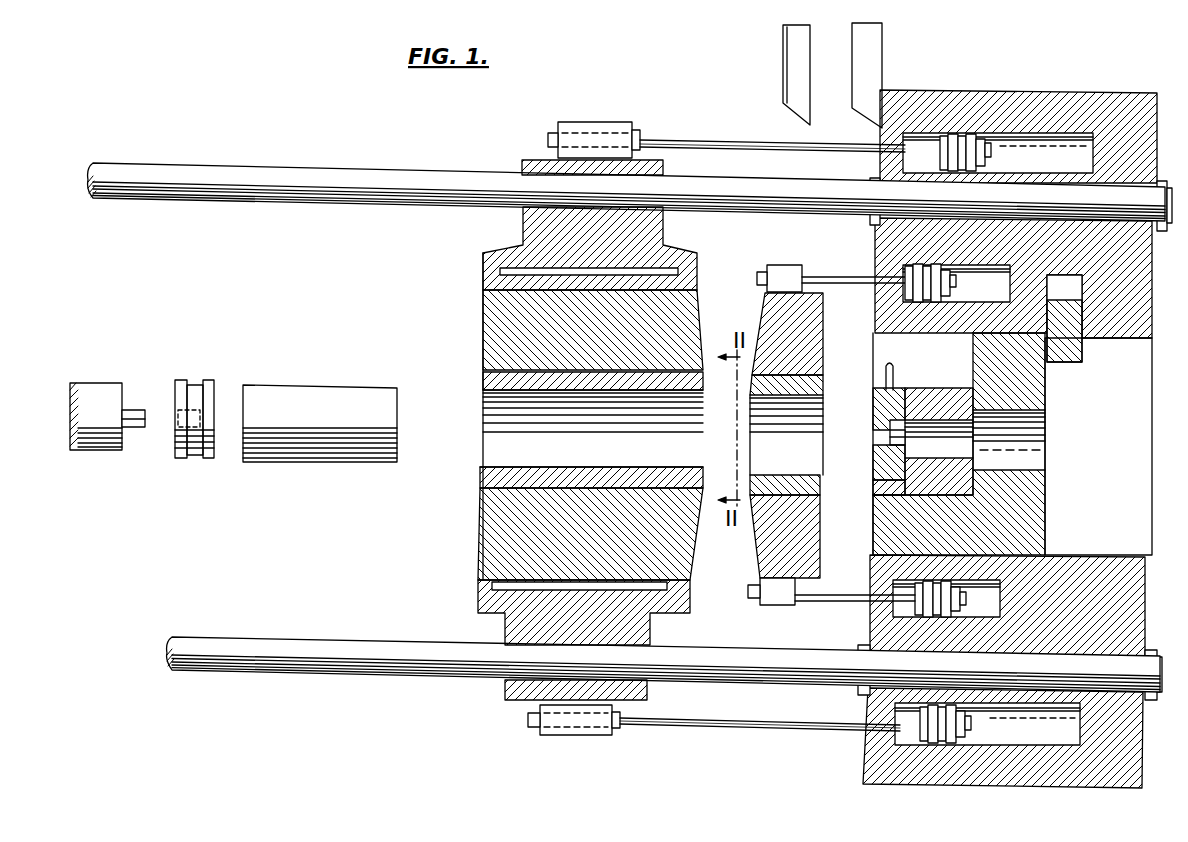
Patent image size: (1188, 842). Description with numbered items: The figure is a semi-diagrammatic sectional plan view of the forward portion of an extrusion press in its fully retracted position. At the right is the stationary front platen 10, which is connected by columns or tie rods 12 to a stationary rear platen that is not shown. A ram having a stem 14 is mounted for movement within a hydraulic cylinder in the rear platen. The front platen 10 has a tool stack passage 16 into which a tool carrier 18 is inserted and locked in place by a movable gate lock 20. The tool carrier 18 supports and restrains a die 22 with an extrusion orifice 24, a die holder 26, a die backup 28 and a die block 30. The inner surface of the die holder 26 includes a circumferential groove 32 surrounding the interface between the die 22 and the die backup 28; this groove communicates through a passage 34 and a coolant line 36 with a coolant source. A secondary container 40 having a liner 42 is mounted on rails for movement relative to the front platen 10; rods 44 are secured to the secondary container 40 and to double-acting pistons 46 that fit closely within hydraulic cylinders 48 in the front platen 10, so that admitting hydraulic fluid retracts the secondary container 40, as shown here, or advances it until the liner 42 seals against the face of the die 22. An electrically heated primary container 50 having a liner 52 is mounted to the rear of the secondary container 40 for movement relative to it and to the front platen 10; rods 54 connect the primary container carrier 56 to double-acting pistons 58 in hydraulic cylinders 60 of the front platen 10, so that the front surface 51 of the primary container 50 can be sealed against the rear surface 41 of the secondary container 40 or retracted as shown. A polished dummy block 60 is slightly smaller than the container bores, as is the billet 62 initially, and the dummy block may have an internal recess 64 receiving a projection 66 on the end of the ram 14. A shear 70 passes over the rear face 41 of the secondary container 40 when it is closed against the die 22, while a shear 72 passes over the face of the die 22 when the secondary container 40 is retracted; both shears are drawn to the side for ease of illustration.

The stationary front platen 10 is at (1070, 80).
The columns or tie rods 12 is at (318, 172).
The ram stem 14 is at (110, 383).
The tool stack passage 16 is at (1098, 446).
The tool carrier 18 is at (1030, 500).
The movable gate lock 20 is at (1065, 355).
The die 22 is at (880, 468).
The extrusion orifice 24 is at (890, 437).
The die holder 26 is at (880, 488).
The die backup 28 is at (905, 400).
The die block 30 is at (930, 470).
The circumferential groove 32 is at (883, 494).
The passage 34 is at (878, 392).
The coolant line 36 is at (893, 370).
The secondary container 40 is at (820, 332).
The rear surface of secondary container 41 is at (752, 483).
The secondary container liner 42 is at (822, 388).
The rods 44 is at (806, 280).
The double-acting pistons 46 is at (905, 276).
The hydraulic cylinders 48 is at (951, 441).
The primary container 50 is at (688, 323).
The front surface of primary container 51 is at (700, 397).
The primary container liner 52 is at (482, 378).
The rods 54 is at (660, 140).
The primary container carrier 56 is at (662, 233).
The double-acting pistons 58 is at (967, 133).
The hydraulic cylinders 60 is at (198, 383).
The billet 62 is at (305, 388).
The internal recess 64 is at (180, 420).
The projection 66 is at (136, 410).
The shear 70 is at (788, 58).
The shear 72 is at (880, 62).